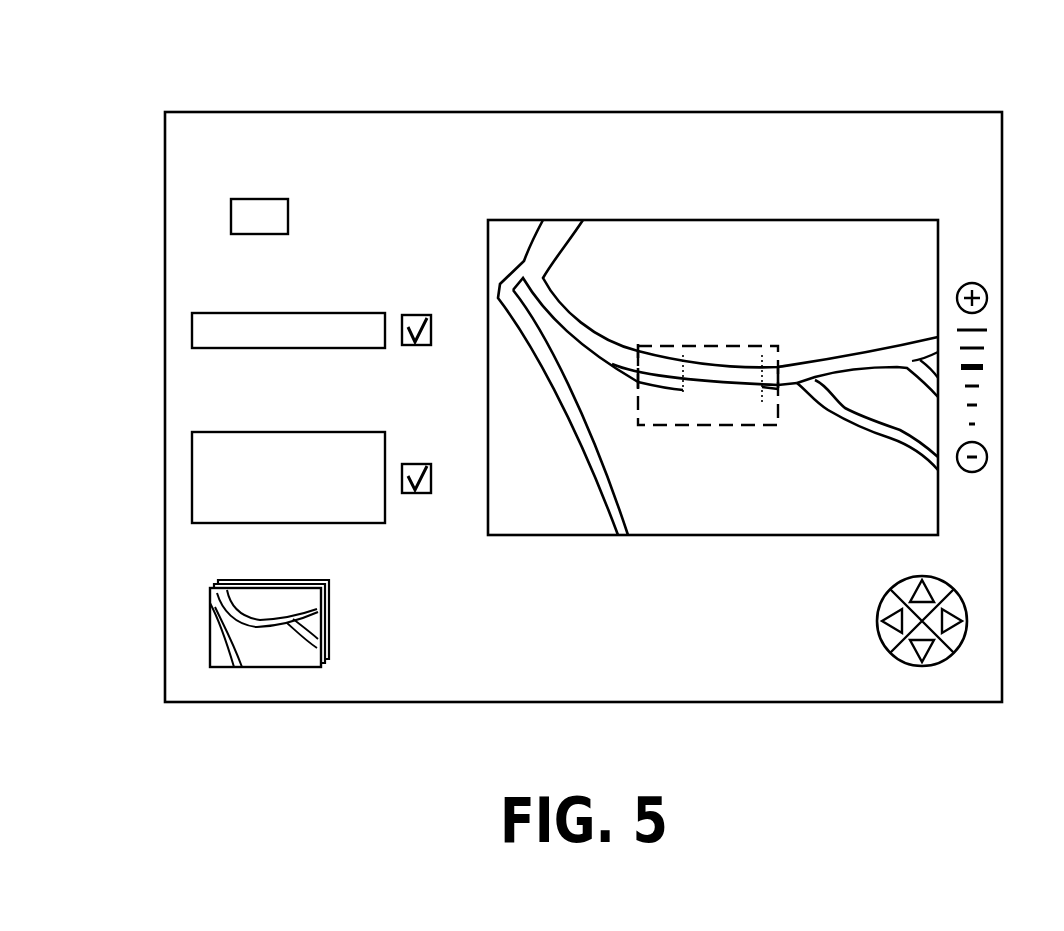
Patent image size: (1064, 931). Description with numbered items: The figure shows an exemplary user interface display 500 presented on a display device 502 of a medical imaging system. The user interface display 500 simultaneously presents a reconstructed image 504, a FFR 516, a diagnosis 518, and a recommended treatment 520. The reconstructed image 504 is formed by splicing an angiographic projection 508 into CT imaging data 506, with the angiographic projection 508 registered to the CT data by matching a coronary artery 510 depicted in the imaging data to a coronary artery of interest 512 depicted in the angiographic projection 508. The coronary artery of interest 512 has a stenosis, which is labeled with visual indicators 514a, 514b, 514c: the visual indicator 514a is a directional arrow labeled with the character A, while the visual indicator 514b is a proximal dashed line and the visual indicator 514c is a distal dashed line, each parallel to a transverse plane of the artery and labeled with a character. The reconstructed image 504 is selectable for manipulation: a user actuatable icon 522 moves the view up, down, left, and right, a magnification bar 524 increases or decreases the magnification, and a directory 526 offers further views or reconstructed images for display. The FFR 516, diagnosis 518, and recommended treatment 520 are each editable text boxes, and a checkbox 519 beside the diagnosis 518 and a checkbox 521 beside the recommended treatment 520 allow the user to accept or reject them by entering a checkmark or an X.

The user interface display 500 is at (1006, 38).
The display device 502 is at (243, 110).
The reconstructed image 504 is at (494, 184).
The CT imaging data 506 is at (860, 218).
The angiographic projection 508 is at (671, 345).
The coronary artery 510 is at (597, 314).
The coronary artery of interest 512 is at (749, 355).
The visual indicator 514a is at (719, 395).
The visual indicator 514b is at (638, 378).
The visual indicator 514c is at (762, 388).
The FFR 516 is at (276, 199).
The diagnosis 518 is at (371, 313).
The checkbox 519 is at (414, 347).
The recommended treatment 520 is at (371, 432).
The checkbox 521 is at (414, 495).
The user actuatable icon 522 is at (882, 600).
The magnification bar 524 is at (984, 262).
The directory 526 is at (329, 590).